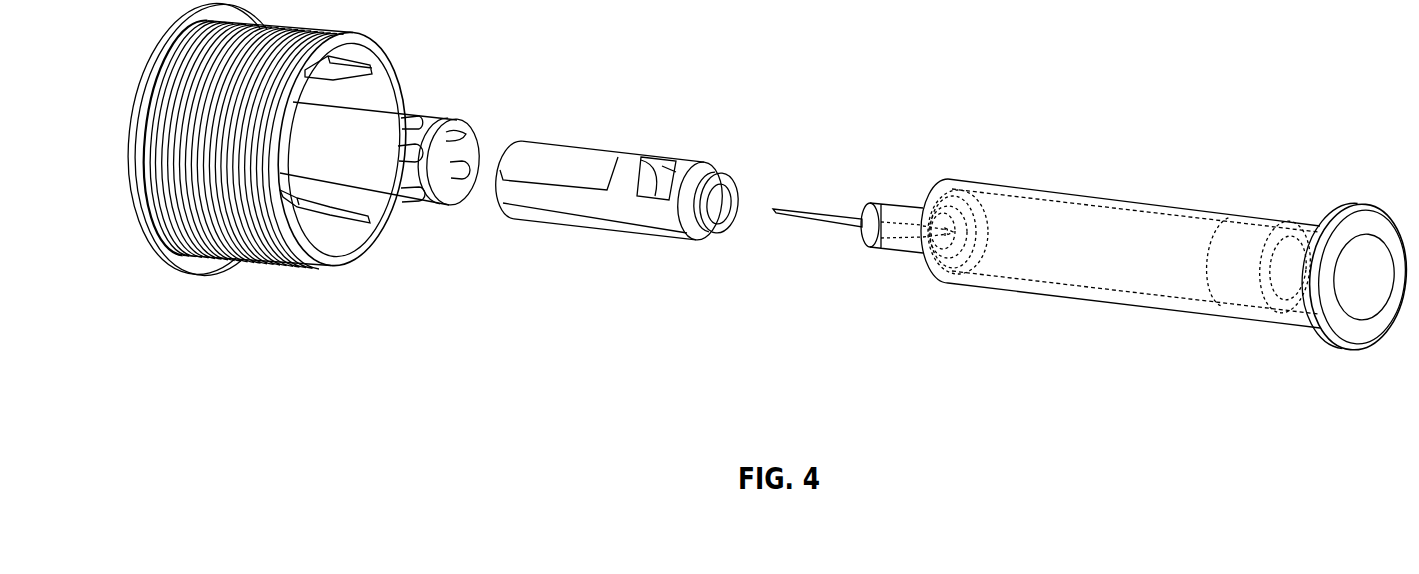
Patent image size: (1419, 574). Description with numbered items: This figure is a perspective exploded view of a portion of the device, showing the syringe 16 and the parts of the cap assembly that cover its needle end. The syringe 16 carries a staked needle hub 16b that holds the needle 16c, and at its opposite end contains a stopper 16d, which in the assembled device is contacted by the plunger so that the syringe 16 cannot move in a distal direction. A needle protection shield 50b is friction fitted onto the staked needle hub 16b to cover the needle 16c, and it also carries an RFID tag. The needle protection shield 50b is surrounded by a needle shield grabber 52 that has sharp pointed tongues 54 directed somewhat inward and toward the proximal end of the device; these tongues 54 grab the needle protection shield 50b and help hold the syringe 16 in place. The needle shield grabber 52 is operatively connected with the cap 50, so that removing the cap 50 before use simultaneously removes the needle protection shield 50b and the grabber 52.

The syringe 16 is at (1120, 304).
The staked needle hub 16b is at (897, 251).
The needle 16c is at (820, 223).
The stopper 16d is at (1252, 240).
The cap 50 is at (267, 266).
The needle protection shield 50b is at (607, 152).
The needle shield grabber 52 is at (390, 137).
The pointed tongues 54 is at (424, 160).